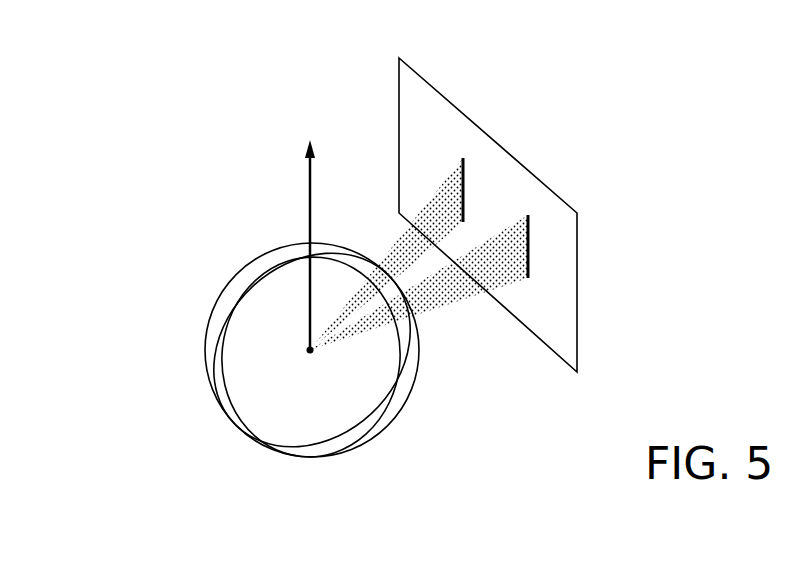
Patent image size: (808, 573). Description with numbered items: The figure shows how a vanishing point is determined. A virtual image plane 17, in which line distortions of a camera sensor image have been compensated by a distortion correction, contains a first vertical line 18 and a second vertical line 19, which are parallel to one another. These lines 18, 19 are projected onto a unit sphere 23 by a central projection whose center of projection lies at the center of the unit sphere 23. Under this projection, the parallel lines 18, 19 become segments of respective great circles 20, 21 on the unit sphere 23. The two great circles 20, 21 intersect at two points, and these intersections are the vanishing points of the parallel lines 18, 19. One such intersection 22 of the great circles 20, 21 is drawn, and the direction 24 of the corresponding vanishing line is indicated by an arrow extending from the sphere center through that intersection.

The virtual image plane 17 is at (435, 97).
The first vertical line 18 is at (465, 190).
The second vertical line 19 is at (530, 247).
The great circle 20 is at (233, 297).
The great circle 21 is at (230, 413).
The intersection 22 is at (307, 257).
The unit sphere 23 is at (310, 460).
The direction 24 is at (315, 183).